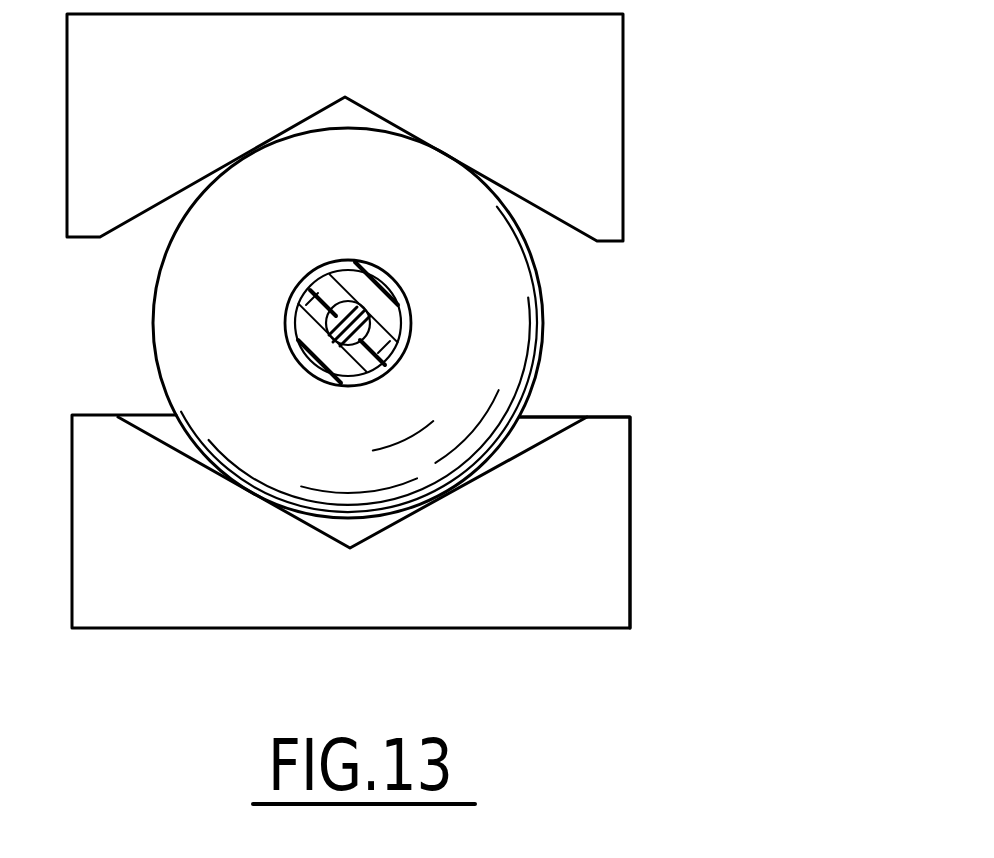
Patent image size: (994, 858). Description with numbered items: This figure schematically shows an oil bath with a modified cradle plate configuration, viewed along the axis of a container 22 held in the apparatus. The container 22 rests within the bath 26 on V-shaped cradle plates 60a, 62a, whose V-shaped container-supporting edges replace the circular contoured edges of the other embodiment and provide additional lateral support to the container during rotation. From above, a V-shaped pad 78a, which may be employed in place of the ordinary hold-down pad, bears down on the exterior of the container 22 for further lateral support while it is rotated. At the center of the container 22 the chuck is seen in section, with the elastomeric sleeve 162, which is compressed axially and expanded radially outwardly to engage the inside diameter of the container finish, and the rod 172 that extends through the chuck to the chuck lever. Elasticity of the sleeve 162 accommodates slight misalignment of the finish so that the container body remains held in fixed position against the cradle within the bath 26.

The V-shaped pad 78a is at (612, 137).
The container 22 is at (560, 283).
The bath 26 is at (642, 420).
The V-shaped cradle plate 60a is at (615, 551).
The V-shaped cradle plate 62a is at (615, 551).
The sleeve 162 is at (315, 287).
The rod 172 is at (330, 330).